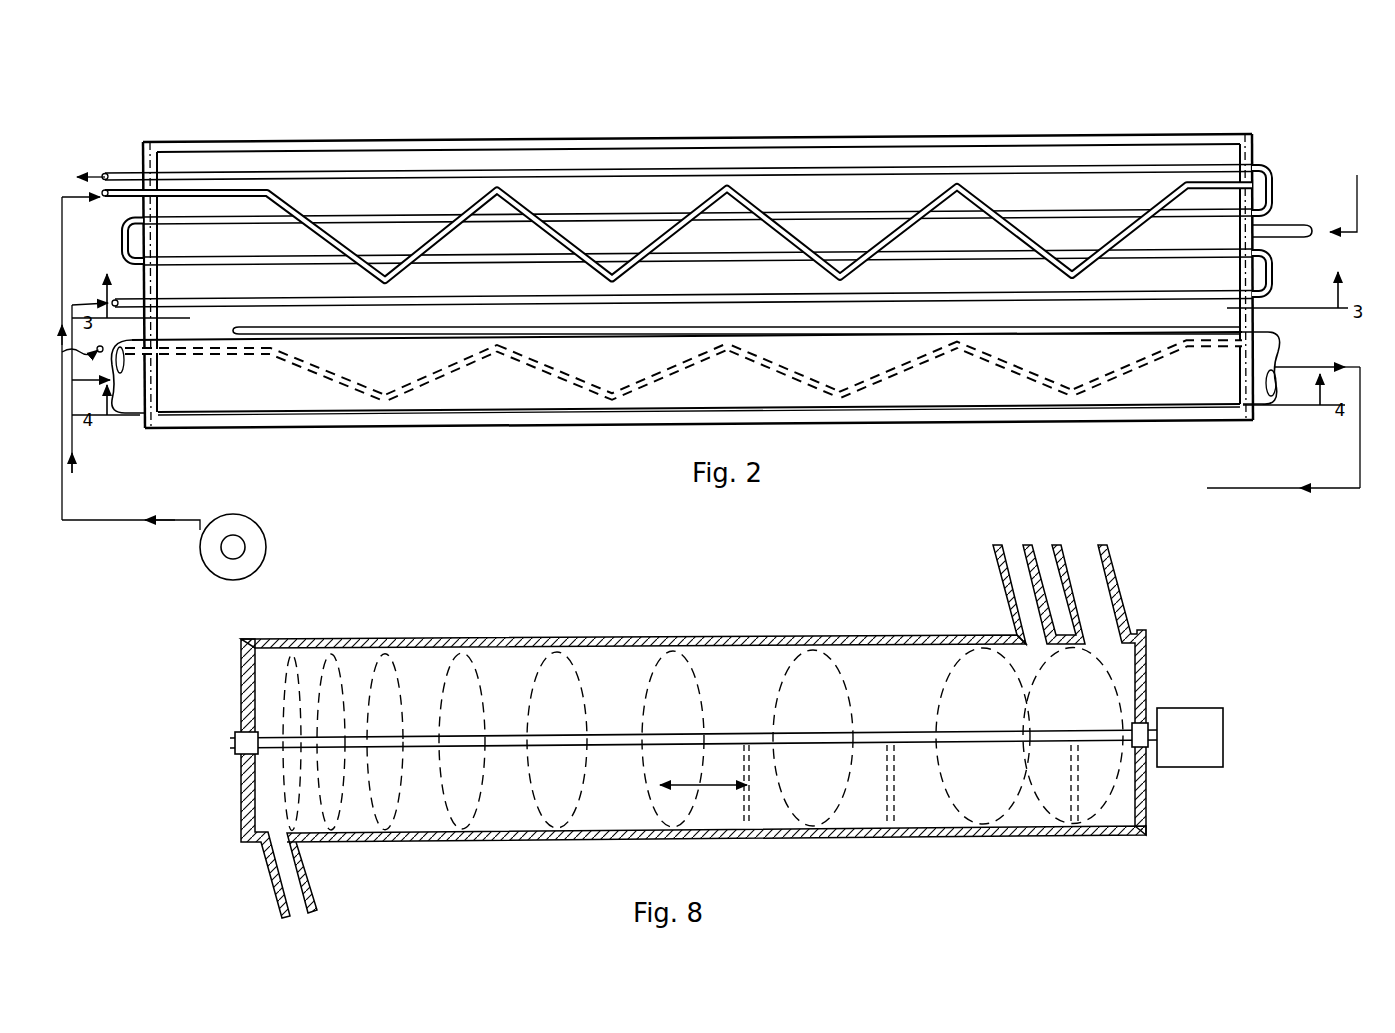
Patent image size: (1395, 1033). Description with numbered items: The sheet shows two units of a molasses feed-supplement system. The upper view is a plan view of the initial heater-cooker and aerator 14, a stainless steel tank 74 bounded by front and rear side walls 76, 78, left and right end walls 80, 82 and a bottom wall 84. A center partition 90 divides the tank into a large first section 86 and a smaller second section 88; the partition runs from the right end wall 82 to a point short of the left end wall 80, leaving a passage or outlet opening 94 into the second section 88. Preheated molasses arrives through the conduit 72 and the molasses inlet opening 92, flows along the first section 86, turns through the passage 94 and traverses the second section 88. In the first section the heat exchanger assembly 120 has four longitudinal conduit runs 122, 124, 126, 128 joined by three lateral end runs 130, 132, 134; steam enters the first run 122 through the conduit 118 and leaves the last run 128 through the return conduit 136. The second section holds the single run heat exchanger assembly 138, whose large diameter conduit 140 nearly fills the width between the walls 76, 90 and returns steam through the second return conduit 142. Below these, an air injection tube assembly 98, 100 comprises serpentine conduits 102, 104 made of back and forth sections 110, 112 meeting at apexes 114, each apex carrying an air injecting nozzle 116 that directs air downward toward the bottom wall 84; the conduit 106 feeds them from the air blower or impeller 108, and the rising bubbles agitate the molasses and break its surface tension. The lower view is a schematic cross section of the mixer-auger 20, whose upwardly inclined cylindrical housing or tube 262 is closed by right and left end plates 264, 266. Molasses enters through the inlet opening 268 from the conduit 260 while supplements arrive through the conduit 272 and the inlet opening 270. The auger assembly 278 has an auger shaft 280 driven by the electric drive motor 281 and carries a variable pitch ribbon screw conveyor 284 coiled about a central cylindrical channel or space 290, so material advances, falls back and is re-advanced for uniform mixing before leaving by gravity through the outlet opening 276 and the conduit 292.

In FIG. 2, the initial heater-cooker and aerator 14 is at (1006, 444).
In FIG. 2, the conduit 72 is at (1290, 233).
In FIG. 2, the tank 74 is at (623, 136).
In FIG. 2, the front side wall 76 is at (468, 428).
In FIG. 2, the rear side wall 78 is at (392, 141).
In FIG. 2, the left end wall 80 is at (143, 152).
In FIG. 2, the right end wall 82 is at (1255, 150).
In FIG. 2, the bottom wall 84 is at (502, 292).
In FIG. 2, the first section 86 is at (821, 162).
In FIG. 2, the second section 88 is at (913, 389).
In FIG. 2, the center partition 90 is at (1036, 325).
In FIG. 2, the molasses inlet opening 92 is at (1254, 231).
In FIG. 2, the passage or outlet opening 94 is at (238, 330).
In FIG. 2, the air injection tube assembly 98 is at (545, 197).
In FIG. 2, the air injection tube assembly 100 is at (555, 363).
In FIG. 2, the serpentine conduit 102 is at (297, 200).
In FIG. 2, the serpentine conduit 104 is at (323, 362).
In FIG. 2, the conduit 106 is at (63, 212).
In FIG. 2, the air blower or impeller 108 is at (247, 516).
In FIG. 2, the back and forth extending section 110 is at (338, 240).
In FIG. 2, the back and forth extending section 112 is at (446, 240).
In FIG. 2, the angular junction or apex 114 is at (736, 196).
In FIG. 2, the air injecting nozzle 116 is at (267, 189).
In FIG. 2, the conduit 118 is at (132, 297).
In FIG. 2, the heat exchanger assembly 120 is at (661, 294).
In FIG. 2, the first conduit run 122 is at (742, 299).
In FIG. 2, the conduit run 124 is at (822, 251).
In FIG. 2, the conduit run 126 is at (830, 211).
In FIG. 2, the last conduit run 128 is at (690, 166).
In FIG. 2, the lateral end run 130 is at (121, 245).
In FIG. 2, the lateral end run 132 is at (1274, 274).
In FIG. 2, the lateral end run 134 is at (1274, 185).
In FIG. 2, the return conduit 136 is at (121, 172).
In FIG. 2, the single run heat exchanger assembly 138 is at (720, 390).
In FIG. 2, the heat exchanger run or conduit 140 is at (797, 411).
In FIG. 2, the second return conduit 142 is at (1360, 453).
In FIG. 8, the mixer-auger 20 is at (442, 608).
In FIG. 8, the conduit 260 is at (1108, 553).
In FIG. 8, the mixer-auger cylindrical housing or tube 262 is at (596, 636).
In FIG. 8, the right end plate 264 is at (1147, 662).
In FIG. 8, the left end plate 266 is at (240, 675).
In FIG. 8, the inlet opening 268 is at (1118, 605).
In FIG. 8, the inlet opening 270 is at (1016, 620).
In FIG. 8, the conduit 272 is at (993, 568).
In FIG. 8, the outlet opening 276 is at (300, 858).
In FIG. 8, the auger assembly 278 is at (930, 812).
In FIG. 8, the auger shaft 280 is at (881, 734).
In FIG. 8, the electric drive motor 281 is at (1214, 723).
In FIG. 8, the ribbon screw conveyor 284 is at (708, 712).
In FIG. 8, the central cylindrical channel or space 290 is at (704, 787).
In FIG. 8, the conduit 292 is at (318, 897).